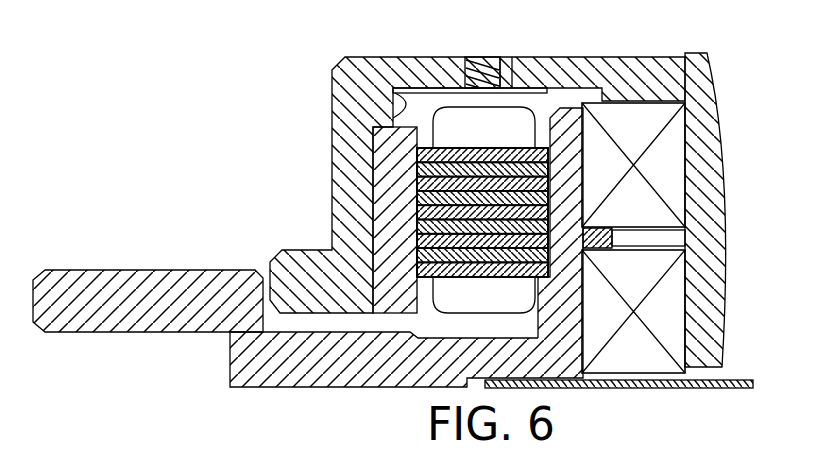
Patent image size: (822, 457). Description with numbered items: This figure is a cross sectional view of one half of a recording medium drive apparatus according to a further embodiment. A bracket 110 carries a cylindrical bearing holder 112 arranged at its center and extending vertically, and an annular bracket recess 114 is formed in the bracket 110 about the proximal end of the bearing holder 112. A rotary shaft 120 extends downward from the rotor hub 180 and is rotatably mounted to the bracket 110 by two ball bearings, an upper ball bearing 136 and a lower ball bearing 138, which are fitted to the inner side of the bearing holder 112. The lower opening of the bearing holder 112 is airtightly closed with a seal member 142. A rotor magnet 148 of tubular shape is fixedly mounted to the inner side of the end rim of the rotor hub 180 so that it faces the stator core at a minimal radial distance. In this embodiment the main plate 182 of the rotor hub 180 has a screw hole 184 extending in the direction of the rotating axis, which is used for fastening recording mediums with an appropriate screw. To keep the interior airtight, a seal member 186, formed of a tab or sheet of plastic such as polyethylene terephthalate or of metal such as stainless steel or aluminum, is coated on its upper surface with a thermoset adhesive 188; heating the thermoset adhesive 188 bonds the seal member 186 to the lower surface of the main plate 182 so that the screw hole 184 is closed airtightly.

The bracket 110 is at (308, 377).
The bearing holder 112 is at (577, 130).
The bracket recess 114 is at (374, 322).
The rotary shaft 120 is at (708, 163).
The ball bearing 136 is at (664, 110).
The ball bearing 138 is at (653, 362).
The seal member 142 is at (716, 388).
The rotor magnet 148 is at (382, 162).
The rotor hub 180 is at (389, 54).
The main plate 182 is at (594, 74).
The screw hole 184 is at (471, 66).
The seal member 186 is at (393, 107).
The thermoset adhesive 188 is at (511, 68).